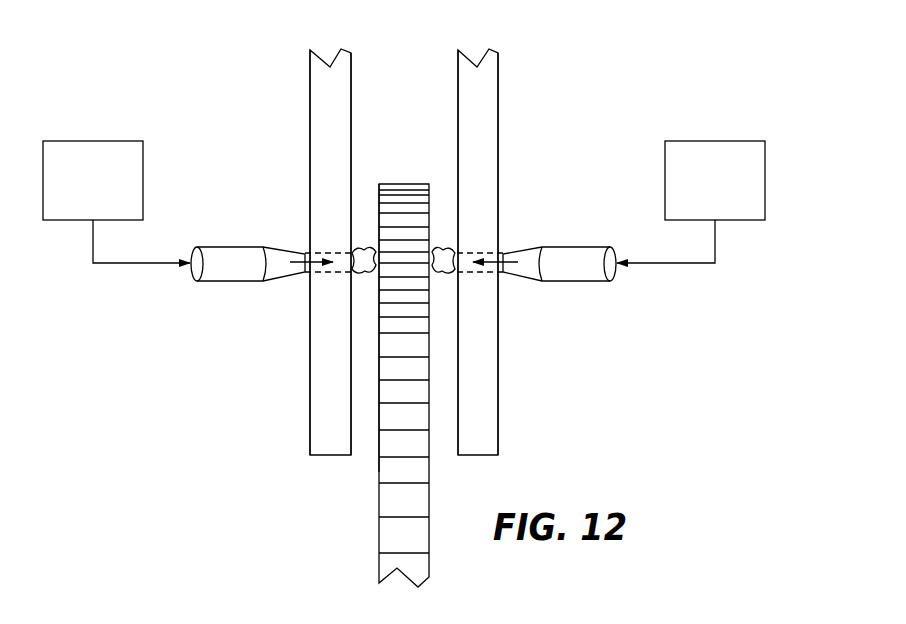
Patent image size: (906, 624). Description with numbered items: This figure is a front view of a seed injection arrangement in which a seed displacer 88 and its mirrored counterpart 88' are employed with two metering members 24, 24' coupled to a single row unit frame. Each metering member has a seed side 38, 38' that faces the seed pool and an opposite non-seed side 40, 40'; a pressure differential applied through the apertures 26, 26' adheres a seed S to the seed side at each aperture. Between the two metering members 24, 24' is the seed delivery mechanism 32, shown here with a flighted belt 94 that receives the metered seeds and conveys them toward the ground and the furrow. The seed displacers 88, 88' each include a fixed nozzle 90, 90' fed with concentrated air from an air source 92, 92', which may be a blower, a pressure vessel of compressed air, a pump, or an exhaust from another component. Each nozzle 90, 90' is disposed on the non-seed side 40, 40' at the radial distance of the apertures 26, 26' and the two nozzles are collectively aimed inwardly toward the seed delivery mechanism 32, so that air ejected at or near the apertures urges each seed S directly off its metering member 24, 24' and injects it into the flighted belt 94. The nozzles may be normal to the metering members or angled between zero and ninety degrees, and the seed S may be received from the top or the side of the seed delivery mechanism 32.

The metering member 24 is at (516, 252).
The metering member 24' is at (290, 252).
The apertures 26 is at (504, 235).
The apertures 26' is at (302, 235).
The seed delivery mechanism 32 is at (363, 528).
The seed side 38 is at (434, 252).
The seed side 38' is at (374, 244).
The non-seed side 40 is at (531, 254).
The non-seed side 40' is at (275, 252).
The seed displacer 88 is at (702, 279).
The seed displacer 88' is at (103, 279).
The nozzle 90 is at (562, 292).
The nozzle 90' is at (244, 292).
The air source 92 is at (719, 155).
The air source 92' is at (88, 155).
The flighted belt 94 is at (379, 472).
The seed S is at (365, 251).